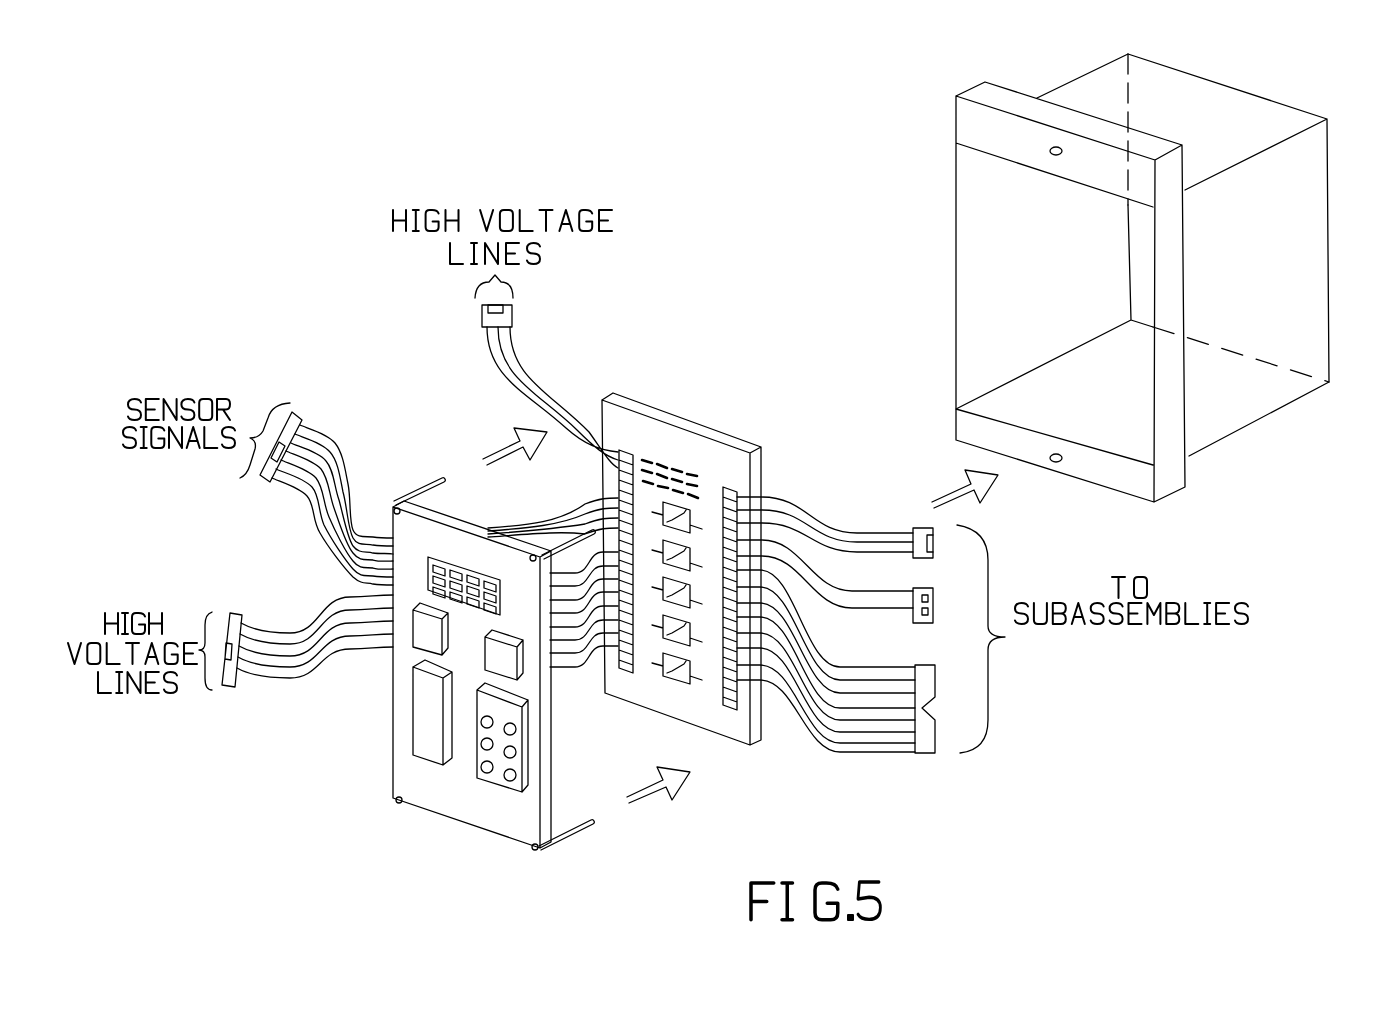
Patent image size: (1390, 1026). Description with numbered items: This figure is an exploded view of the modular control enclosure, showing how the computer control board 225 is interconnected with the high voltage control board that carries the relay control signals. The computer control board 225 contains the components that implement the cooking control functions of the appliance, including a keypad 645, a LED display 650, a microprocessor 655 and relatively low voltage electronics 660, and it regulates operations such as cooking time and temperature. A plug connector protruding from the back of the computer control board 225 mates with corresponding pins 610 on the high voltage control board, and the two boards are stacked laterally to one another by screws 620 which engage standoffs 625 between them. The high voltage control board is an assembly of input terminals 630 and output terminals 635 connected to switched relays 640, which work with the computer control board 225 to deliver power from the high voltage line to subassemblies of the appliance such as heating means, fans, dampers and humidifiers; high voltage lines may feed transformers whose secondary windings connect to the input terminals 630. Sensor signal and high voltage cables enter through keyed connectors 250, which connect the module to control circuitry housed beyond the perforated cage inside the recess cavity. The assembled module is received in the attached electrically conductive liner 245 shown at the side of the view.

The computer control board 225 is at (461, 692).
The electrically conductive liner 245 is at (1165, 266).
The keyed connectors 250 is at (582, 545).
The pins 610 is at (695, 532).
The screws 620 is at (424, 613).
The standoffs 625 is at (537, 643).
The input terminals 630 is at (663, 486).
The output terminals 635 is at (792, 529).
The switched relays 640 is at (736, 667).
The keypad 645 is at (558, 737).
The LED display 650 is at (451, 571).
The microprocessor 655 is at (386, 717).
The low voltage electronics 660 is at (464, 667).